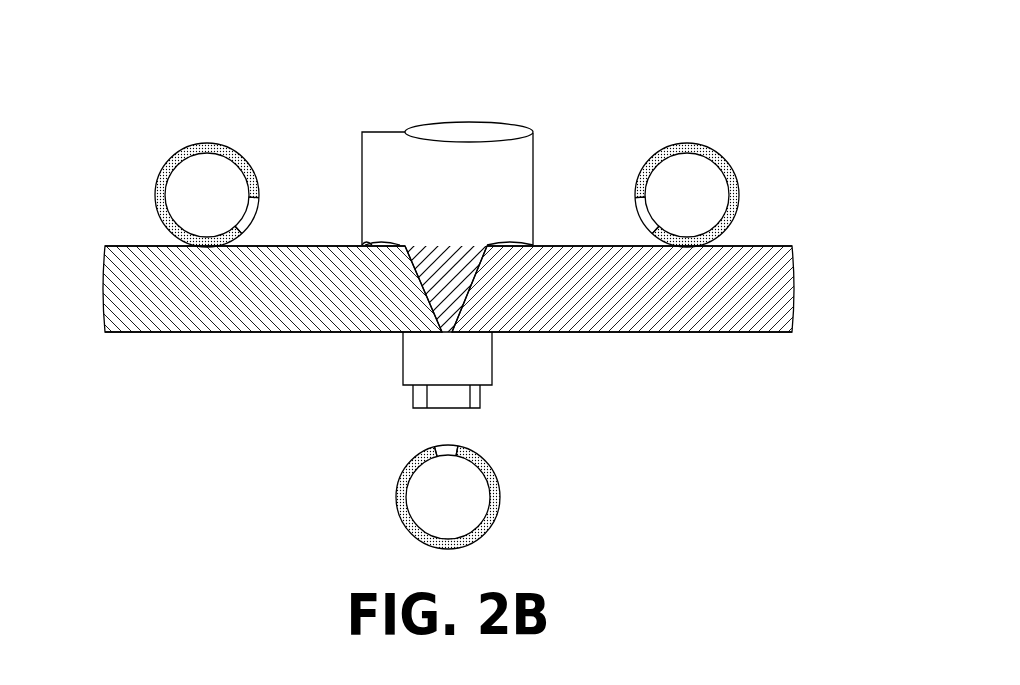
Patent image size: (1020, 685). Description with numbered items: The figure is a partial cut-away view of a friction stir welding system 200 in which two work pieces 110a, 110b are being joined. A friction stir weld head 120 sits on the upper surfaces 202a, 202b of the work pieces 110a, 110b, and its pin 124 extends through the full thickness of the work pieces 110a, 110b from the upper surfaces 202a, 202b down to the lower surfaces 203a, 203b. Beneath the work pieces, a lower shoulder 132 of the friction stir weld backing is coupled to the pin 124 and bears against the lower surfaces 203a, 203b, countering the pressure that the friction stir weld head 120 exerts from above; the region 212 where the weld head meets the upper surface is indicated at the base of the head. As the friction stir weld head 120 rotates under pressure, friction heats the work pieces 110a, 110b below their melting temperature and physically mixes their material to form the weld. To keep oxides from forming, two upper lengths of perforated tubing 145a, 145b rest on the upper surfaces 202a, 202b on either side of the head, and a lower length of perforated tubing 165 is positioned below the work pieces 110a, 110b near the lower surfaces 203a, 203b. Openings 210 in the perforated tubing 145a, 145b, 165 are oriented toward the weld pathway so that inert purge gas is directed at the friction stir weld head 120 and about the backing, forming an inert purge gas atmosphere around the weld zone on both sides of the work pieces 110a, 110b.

The friction stir welding system 200 is at (846, 100).
The friction stir weld head 120 is at (556, 140).
The work piece 110a is at (104, 290).
The work piece 110b is at (794, 290).
The upper surface 202a is at (106, 246).
The upper surface 202b is at (795, 246).
The lower surface 203a is at (104, 334).
The lower surface 203b is at (792, 334).
The contact interface 212 is at (362, 243).
The pin 124 is at (470, 305).
The lower shoulder 132 is at (382, 374).
The perforated tubing 145a is at (208, 143).
The perforated tubing 145b is at (687, 143).
The perforated tubing 165 is at (500, 497).
The openings 210 is at (272, 214).